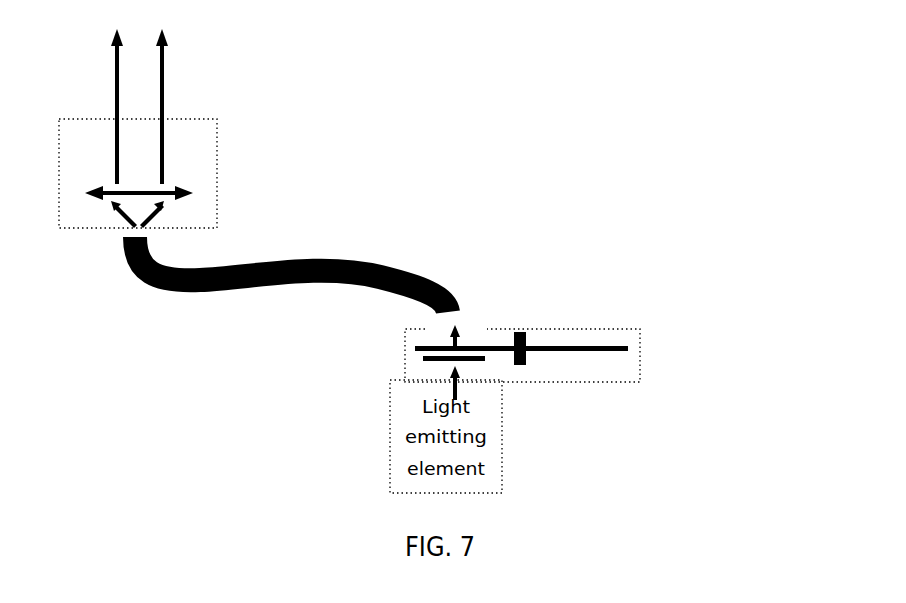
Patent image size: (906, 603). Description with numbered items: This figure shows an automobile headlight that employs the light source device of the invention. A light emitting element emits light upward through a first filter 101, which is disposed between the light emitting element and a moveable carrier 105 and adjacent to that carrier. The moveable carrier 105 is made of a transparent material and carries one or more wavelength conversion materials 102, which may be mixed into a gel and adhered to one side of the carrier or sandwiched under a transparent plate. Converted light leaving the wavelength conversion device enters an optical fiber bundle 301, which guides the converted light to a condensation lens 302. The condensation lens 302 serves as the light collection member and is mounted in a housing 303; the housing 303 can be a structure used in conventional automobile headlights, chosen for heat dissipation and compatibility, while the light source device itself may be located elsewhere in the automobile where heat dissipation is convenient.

The housing 303 is at (308, 128).
The condensation lens 302 is at (321, 154).
The optical fiber bundle 301 is at (444, 252).
The moveable carrier 105 is at (603, 368).
The wavelength conversion materials 102 is at (610, 366).
The first filter 101 is at (588, 403).